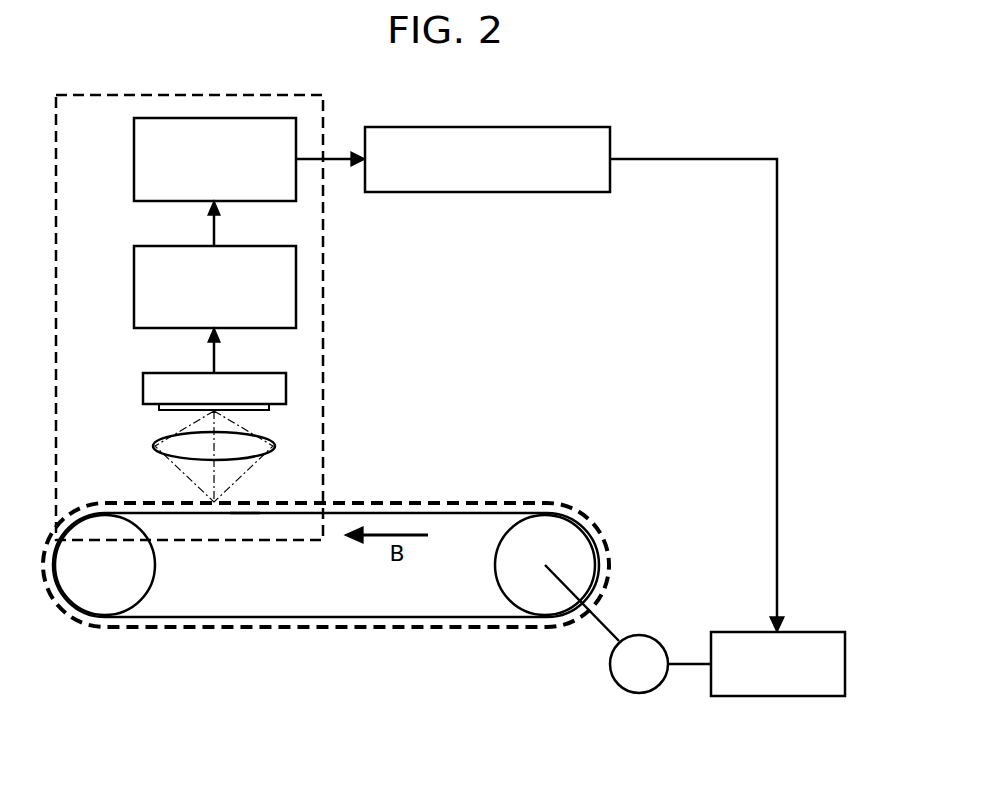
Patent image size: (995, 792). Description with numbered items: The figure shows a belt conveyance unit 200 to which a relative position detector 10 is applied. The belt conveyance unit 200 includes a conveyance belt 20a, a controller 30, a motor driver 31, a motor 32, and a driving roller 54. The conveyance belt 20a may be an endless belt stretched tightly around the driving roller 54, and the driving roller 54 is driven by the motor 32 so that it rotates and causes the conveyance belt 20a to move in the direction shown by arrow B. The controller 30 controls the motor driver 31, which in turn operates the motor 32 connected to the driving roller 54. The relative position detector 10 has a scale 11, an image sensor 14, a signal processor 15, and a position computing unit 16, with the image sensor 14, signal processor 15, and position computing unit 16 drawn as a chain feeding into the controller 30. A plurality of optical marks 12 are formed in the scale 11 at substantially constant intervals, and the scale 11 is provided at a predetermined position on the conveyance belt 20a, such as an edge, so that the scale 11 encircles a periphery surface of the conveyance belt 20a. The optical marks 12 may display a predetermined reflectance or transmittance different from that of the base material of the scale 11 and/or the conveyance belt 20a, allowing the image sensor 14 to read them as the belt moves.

The relative position detector 10 is at (325, 337).
The scale 11 is at (553, 503).
The optical marks 12 is at (415, 500).
The image sensor 14 is at (143, 390).
The signal processor 15 is at (134, 290).
The position computing unit 16 is at (134, 165).
The conveyance belt 20a is at (244, 520).
The controller 30 is at (583, 127).
The motor driver 31 is at (815, 632).
The motor 32 is at (648, 640).
The driving roller 54 is at (495, 580).
The belt conveyance unit 200 is at (463, 648).